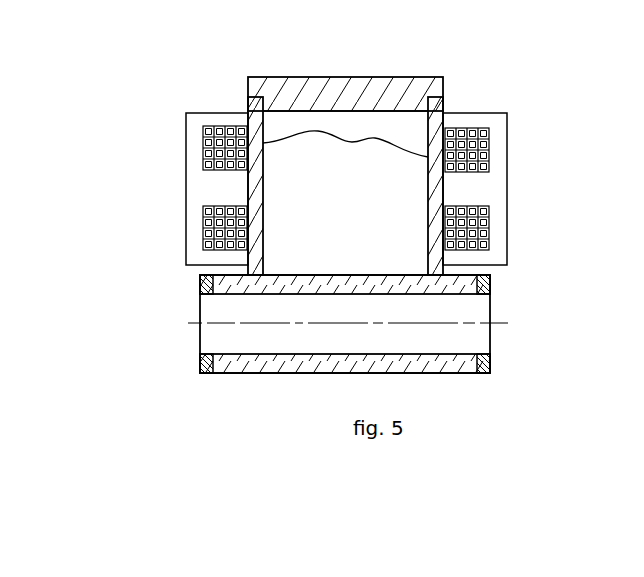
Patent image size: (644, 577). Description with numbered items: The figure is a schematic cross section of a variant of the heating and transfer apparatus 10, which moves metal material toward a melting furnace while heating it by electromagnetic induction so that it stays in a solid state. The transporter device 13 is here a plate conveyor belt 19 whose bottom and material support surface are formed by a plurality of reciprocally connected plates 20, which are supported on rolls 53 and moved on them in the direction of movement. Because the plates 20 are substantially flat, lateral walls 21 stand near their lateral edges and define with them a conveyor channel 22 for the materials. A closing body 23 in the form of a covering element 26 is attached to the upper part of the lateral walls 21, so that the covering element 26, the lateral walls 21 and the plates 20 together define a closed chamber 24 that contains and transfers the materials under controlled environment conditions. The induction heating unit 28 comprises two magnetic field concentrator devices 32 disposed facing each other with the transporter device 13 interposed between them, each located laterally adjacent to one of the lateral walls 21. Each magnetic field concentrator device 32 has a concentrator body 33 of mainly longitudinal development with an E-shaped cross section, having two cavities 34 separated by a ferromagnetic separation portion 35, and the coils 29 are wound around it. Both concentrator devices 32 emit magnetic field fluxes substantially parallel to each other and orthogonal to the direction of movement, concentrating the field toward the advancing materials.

The heating and transfer apparatus 10 is at (504, 77).
The transporter device 13 is at (506, 318).
The plate conveyor belt 19 is at (216, 270).
The plates 20 is at (227, 284).
The lateral walls 21 is at (254, 193).
The conveyor channel 22 is at (270, 127).
The closing body 23 is at (320, 77).
The chamber 24 is at (400, 128).
The covering element 26 is at (373, 88).
The induction heating unit 28 is at (512, 126).
The coils 29 is at (200, 145).
The magnetic field concentrator device 32 is at (185, 128).
The concentrator body 33 is at (186, 234).
The cavities 34 is at (228, 127).
The ferromagnetic separation portion 35 is at (218, 178).
The rolls 53 is at (213, 338).